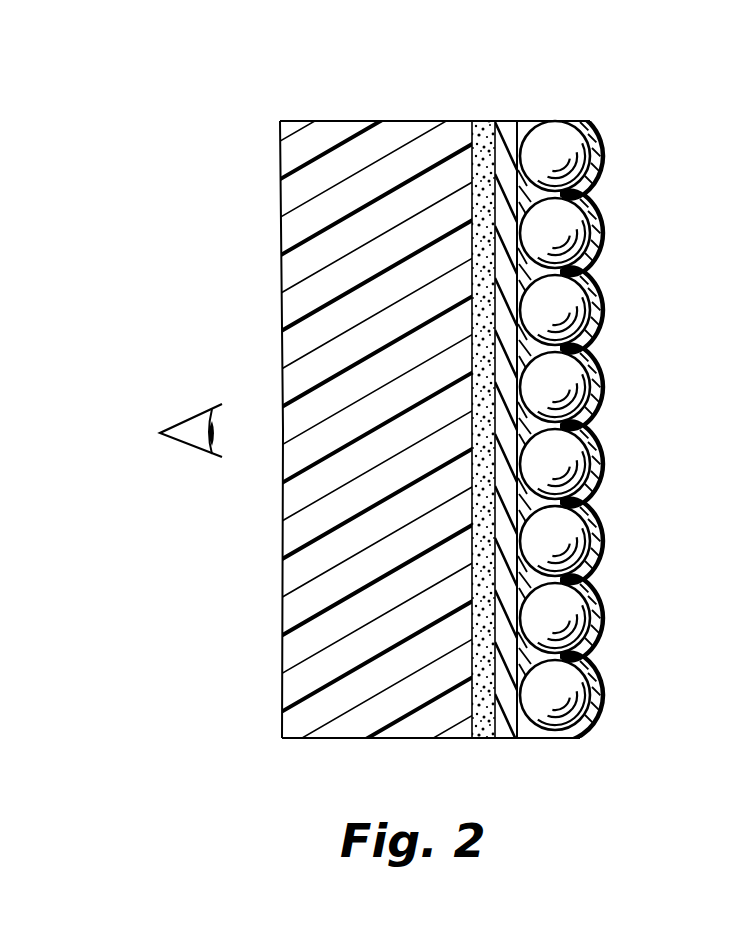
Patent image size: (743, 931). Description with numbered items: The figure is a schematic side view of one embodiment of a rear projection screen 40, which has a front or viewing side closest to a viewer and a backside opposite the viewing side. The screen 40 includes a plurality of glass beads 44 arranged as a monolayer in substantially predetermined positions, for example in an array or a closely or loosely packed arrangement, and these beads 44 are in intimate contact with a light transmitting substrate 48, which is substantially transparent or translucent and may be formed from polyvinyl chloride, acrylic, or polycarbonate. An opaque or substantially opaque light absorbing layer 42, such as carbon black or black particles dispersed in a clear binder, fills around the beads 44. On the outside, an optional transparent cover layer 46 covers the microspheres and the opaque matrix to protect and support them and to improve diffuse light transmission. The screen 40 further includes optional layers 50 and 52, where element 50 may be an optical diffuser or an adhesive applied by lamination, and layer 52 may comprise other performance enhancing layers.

The rear projection screen 40 is at (621, 88).
The light absorbing layer 42 is at (527, 728).
The glass beads 44 is at (555, 133).
The cover layer 46 is at (592, 130).
The light transmitting substrate 48 is at (503, 728).
The optical diffuser 50 is at (483, 728).
The optional layer 52 is at (330, 135).